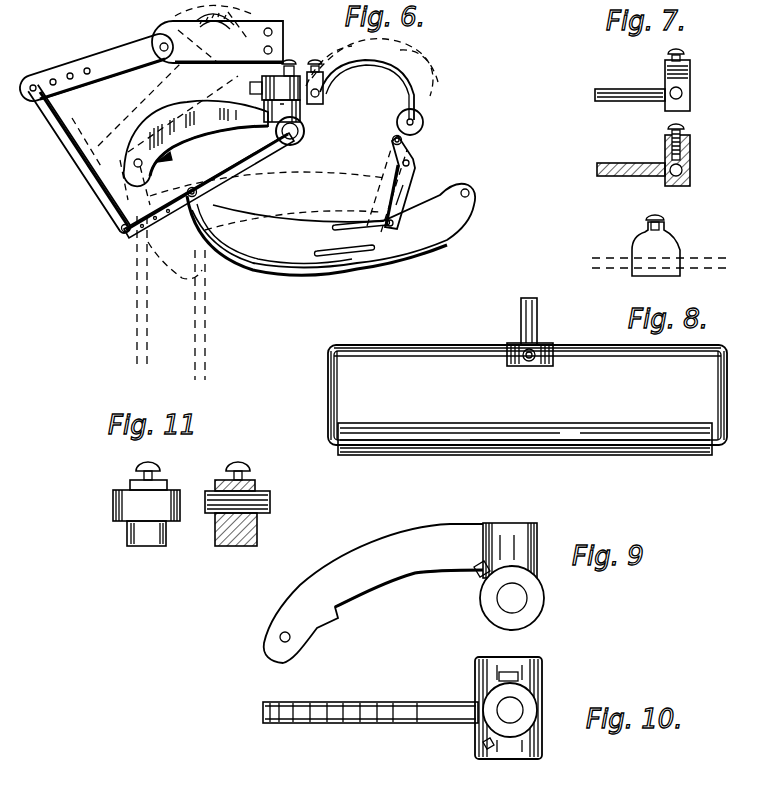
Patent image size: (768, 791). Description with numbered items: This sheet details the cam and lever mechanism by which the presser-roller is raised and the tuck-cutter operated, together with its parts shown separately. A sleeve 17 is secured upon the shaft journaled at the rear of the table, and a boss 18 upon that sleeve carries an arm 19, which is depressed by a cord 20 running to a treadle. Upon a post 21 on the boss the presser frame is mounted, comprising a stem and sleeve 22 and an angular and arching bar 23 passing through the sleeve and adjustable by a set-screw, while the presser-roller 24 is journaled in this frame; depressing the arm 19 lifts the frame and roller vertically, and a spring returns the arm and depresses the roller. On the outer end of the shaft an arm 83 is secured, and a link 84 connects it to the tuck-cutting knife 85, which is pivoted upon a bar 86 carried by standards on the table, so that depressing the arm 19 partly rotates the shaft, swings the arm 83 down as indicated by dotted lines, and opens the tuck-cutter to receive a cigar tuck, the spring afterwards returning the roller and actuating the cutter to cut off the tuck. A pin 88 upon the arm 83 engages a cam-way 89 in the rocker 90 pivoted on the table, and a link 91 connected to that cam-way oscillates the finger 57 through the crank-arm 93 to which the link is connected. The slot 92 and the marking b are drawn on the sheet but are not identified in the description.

In FIG. 6, the sleeve 17 is at (296, 140).
In FIG. 6, the boss 18 is at (303, 122).
In FIG. 6, the arm 19 is at (196, 144).
In FIG. 9, the arm 19 is at (373, 593).
In FIG. 10, the arm 19 is at (370, 701).
In FIG. 6, the cord 20 is at (155, 298).
In FIG. 6, the post 21 is at (300, 104).
In FIG. 11, the post 21 is at (189, 504).
In FIG. 9, the post 21 is at (520, 576).
In FIG. 10, the post 21 is at (522, 708).
In FIG. 6, the stem and sleeve 22 is at (327, 84).
In FIG. 7, the stem and sleeve 22 is at (661, 162).
In FIG. 8, the stem and sleeve 22 is at (539, 332).
In FIG. 6, the angular and arching bar 23 is at (382, 90).
In FIG. 8, the angular and arching bar 23 is at (527, 395).
In FIG. 6, the presser-roller 24 is at (424, 122).
In FIG. 8, the presser-roller 24 is at (525, 427).
In FIG. 6, the finger 57 is at (392, 139).
In FIG. 6, the arm 83 is at (209, 185).
In FIG. 6, the link 84 is at (79, 159).
In FIG. 6, the tuck-cutting knife 85 is at (96, 67).
In FIG. 6, the bar 86 is at (217, 42).
In FIG. 6, the pin 88 is at (192, 176).
In FIG. 6, the cam-way 89 is at (317, 235).
In FIG. 6, the rocker 90 is at (333, 226).
In FIG. 6, the link 91 is at (415, 190).
In FIG. 6, the slot 92 is at (375, 233).
In FIG. 6, the crank-arm 93 is at (412, 158).
In FIG. 6, the sector b is at (215, 34).